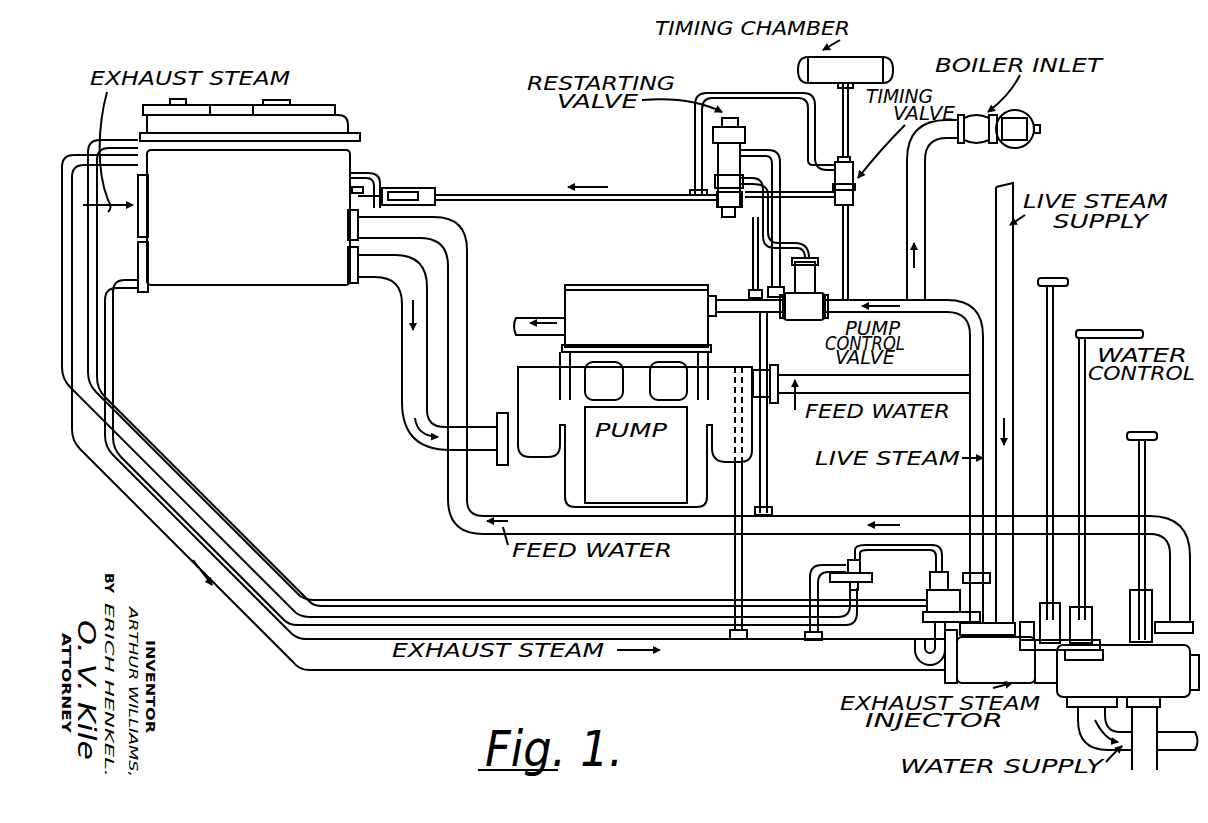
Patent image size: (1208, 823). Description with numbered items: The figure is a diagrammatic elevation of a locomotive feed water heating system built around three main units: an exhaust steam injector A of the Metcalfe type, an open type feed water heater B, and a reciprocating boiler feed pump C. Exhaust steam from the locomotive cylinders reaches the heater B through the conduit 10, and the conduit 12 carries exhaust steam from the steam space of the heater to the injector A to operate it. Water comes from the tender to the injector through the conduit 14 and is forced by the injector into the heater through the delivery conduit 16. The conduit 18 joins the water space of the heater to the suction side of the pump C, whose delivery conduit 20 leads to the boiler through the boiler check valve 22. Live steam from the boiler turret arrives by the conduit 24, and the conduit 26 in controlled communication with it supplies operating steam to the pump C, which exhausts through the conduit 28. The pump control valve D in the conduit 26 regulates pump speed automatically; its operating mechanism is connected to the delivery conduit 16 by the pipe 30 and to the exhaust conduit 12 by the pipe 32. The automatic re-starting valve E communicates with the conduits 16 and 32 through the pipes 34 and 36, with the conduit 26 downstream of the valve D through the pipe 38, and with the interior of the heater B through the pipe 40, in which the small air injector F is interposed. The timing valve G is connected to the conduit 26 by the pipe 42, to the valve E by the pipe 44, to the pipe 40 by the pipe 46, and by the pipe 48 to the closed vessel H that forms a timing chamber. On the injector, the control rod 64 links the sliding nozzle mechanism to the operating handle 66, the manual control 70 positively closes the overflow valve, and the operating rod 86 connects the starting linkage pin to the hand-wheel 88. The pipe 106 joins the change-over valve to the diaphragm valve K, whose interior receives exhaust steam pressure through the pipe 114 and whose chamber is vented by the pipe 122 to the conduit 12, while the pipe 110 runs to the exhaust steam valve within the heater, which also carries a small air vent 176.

The conduit 10 is at (133, 192).
The open type feed water heater B is at (240, 287).
The air vent 176 is at (374, 176).
The air injector F is at (420, 188).
The pipe 40 is at (522, 196).
The pipe 46 is at (695, 122).
The automatic re-starting valve E is at (737, 136).
The pipe 36 is at (778, 150).
The pipe 34 is at (770, 223).
The pipe 38 is at (752, 234).
The pipe 44 is at (815, 192).
The pipe 42 is at (849, 245).
The pipe 48 is at (850, 128).
The timing valve G is at (860, 178).
The closed vessel H is at (873, 55).
The boiler check valve 22 is at (981, 115).
The boiler feed pump C is at (624, 283).
The conduit 28 is at (526, 318).
The conduit 26 is at (724, 298).
The pipe 30 is at (768, 347).
The pump control valve D is at (803, 316).
The delivery conduit 20 is at (832, 378).
The conduit 18 is at (410, 348).
The delivery conduit 16 is at (856, 524).
The pipe 114 is at (165, 482).
The pipe 110 is at (512, 600).
The conduit 12 is at (378, 660).
The pipe 32 is at (744, 562).
The diaphragm valve K is at (842, 562).
The pipe 122 is at (810, 583).
The pipe 106 is at (880, 549).
The conduit 24 is at (1013, 242).
The operating hand-wheel 88 is at (1066, 279).
The operating rod 86 is at (1048, 416).
The operating handle 66 is at (1106, 331).
The control rod 64 is at (1084, 414).
The manual control 70 is at (1146, 483).
The exhaust steam injector A is at (1113, 643).
The conduit 14 is at (1165, 750).